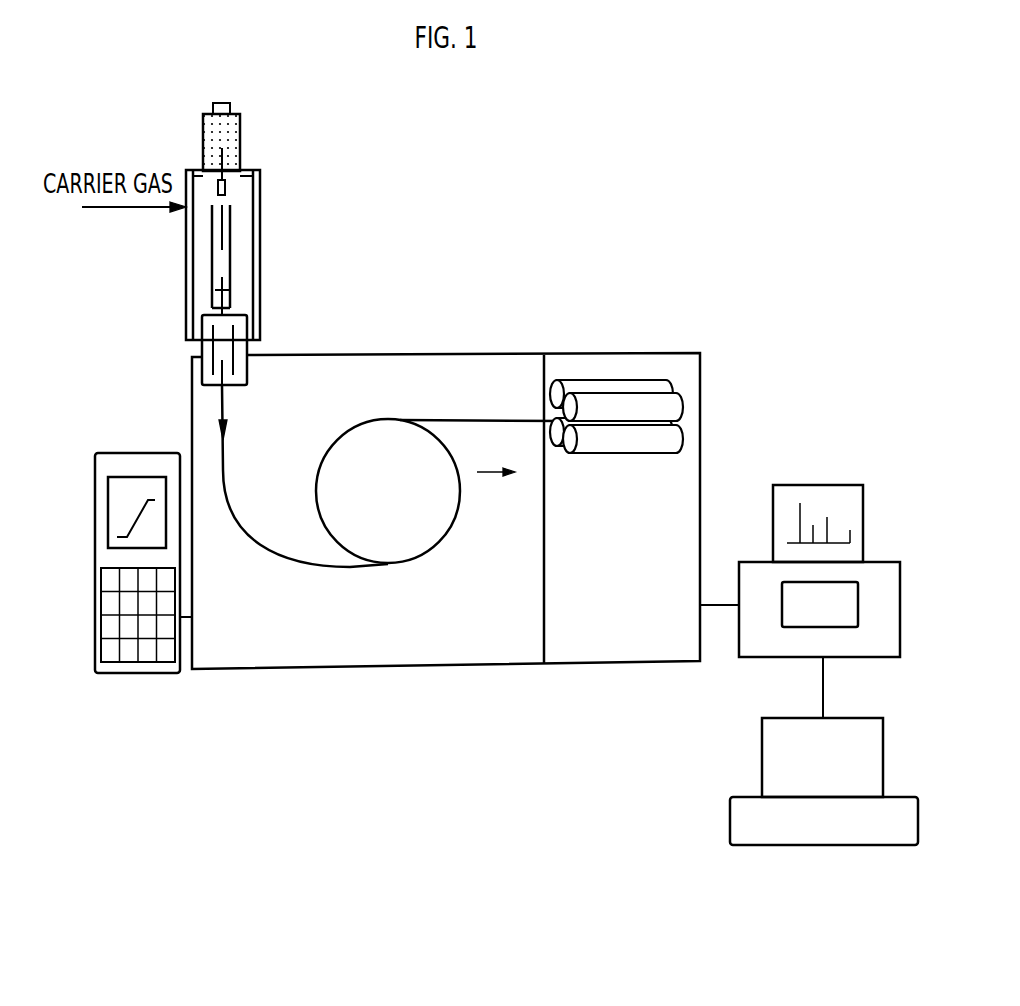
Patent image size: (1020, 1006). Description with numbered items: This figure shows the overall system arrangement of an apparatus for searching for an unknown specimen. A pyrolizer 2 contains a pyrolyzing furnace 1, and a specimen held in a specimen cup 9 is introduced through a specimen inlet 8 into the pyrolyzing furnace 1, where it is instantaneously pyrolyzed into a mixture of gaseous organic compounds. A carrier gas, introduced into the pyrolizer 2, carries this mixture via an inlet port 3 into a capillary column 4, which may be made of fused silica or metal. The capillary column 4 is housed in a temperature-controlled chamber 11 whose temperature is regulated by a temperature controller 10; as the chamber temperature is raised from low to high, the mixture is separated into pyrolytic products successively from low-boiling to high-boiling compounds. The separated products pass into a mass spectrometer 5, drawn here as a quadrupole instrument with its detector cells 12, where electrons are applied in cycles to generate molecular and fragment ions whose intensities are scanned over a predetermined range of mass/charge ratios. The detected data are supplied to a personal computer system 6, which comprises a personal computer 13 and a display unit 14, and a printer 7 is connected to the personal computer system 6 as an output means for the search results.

The pyrolyzing furnace 1 is at (231, 250).
The pyrolizer 2 is at (278, 239).
The inlet port 3 is at (200, 350).
The capillary column 4 is at (313, 567).
The mass spectrometer 5 is at (603, 663).
The personal computer system 6 is at (887, 470).
The printer 7 is at (843, 717).
The specimen inlet 8 is at (240, 127).
The specimen cup 9 is at (225, 186).
The temperature controller 10 is at (150, 673).
The temperature-controlled chamber 11 is at (358, 669).
The detector cells 12 is at (612, 378).
The personal computer 13 is at (870, 560).
The display unit 14 is at (825, 484).